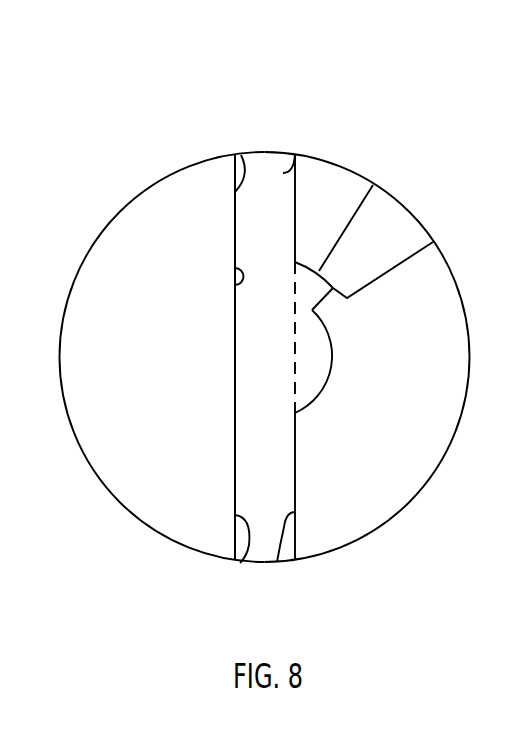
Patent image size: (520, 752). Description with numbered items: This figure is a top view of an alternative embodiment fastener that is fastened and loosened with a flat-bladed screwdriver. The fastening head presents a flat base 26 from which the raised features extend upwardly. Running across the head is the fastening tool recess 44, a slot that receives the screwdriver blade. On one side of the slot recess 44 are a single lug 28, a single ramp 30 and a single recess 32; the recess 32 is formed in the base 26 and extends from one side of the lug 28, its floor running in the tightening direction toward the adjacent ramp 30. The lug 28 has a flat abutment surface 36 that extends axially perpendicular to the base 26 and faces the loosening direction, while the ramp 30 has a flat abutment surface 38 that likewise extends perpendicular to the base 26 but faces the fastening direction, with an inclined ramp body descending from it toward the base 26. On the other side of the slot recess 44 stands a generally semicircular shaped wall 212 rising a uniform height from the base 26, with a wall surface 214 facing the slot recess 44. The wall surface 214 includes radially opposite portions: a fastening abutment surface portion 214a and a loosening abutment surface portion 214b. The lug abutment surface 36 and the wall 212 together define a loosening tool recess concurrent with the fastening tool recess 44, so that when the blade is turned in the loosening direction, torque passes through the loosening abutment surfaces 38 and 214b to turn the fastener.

The semicircular shaped wall 212 is at (132, 376).
The flat base 26 is at (275, 364).
The circumferential ramp 30 is at (378, 427).
The drive lug 28 is at (327, 188).
The recess 32 is at (398, 213).
The flat abutment surface of the lug 36 is at (283, 173).
The flat abutment surface of the ramp 38 is at (277, 562).
The fastening tool recess 44 is at (257, 175).
The wall surface 214 is at (235, 268).
The fastening abutment surface portion 214a is at (240, 563).
The loosening abutment surface portion 214b is at (241, 155).